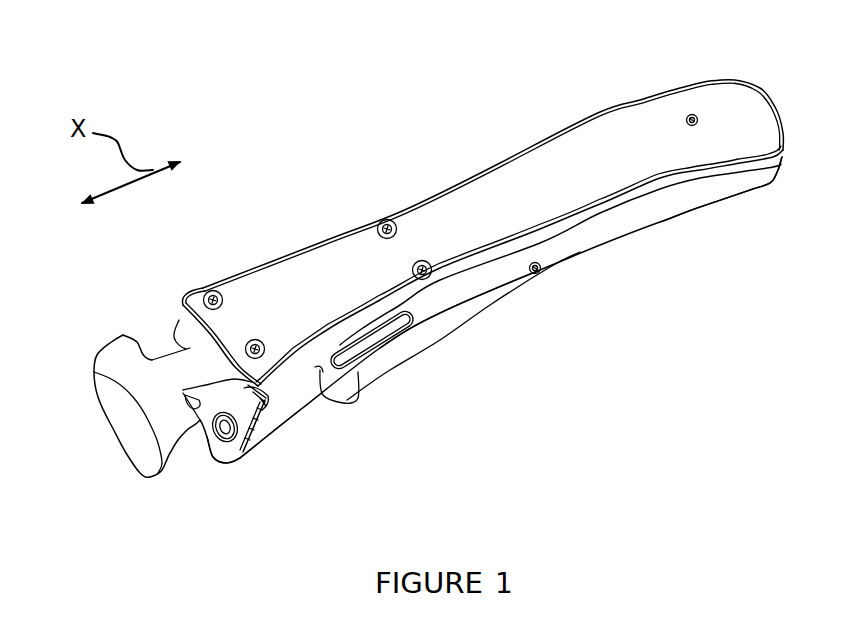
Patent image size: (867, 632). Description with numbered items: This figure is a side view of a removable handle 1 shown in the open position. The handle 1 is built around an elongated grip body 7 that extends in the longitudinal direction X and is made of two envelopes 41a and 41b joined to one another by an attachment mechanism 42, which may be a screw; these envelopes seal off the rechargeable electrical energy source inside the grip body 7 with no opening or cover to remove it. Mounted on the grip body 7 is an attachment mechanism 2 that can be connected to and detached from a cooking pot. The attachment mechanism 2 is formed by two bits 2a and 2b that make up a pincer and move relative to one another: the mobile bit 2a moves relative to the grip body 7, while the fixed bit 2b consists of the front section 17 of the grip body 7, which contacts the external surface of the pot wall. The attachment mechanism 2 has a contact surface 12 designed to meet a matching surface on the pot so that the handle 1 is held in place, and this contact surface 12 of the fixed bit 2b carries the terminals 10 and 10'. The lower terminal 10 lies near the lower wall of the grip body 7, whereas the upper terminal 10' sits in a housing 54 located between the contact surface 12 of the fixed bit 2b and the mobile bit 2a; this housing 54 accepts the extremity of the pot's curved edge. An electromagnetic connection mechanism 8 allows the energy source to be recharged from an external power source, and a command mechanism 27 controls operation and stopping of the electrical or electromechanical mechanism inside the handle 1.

The removable handle 1 is at (573, 325).
The attachment mechanism 2 is at (100, 302).
The mobile bit 2a is at (130, 452).
The fixed bit 2b is at (241, 459).
The grip body 7 is at (747, 192).
The electromagnetic connection mechanism 8 is at (222, 456).
The lower terminal 10 is at (190, 461).
The upper terminal 10' is at (218, 402).
The contact surface 12 is at (252, 420).
The front section 17 is at (261, 464).
The command mechanism 27 is at (437, 340).
The envelope 41a is at (527, 157).
The envelope 41b is at (663, 220).
The attachment mechanism 42 is at (697, 117).
The housing 54 is at (266, 400).